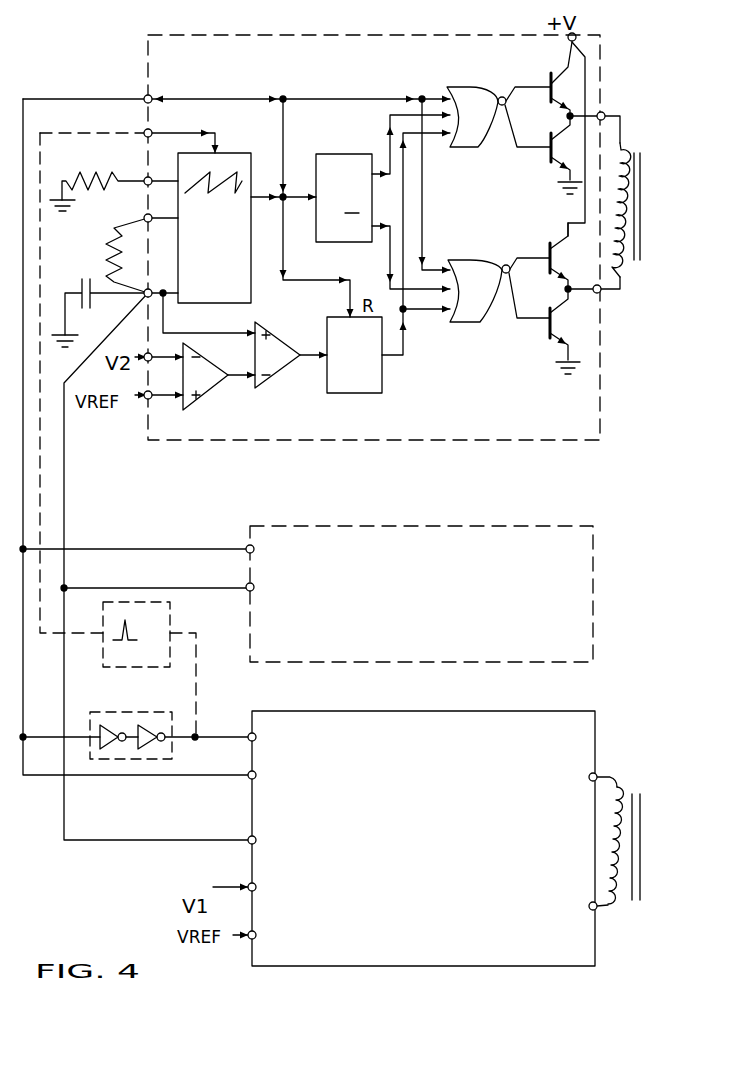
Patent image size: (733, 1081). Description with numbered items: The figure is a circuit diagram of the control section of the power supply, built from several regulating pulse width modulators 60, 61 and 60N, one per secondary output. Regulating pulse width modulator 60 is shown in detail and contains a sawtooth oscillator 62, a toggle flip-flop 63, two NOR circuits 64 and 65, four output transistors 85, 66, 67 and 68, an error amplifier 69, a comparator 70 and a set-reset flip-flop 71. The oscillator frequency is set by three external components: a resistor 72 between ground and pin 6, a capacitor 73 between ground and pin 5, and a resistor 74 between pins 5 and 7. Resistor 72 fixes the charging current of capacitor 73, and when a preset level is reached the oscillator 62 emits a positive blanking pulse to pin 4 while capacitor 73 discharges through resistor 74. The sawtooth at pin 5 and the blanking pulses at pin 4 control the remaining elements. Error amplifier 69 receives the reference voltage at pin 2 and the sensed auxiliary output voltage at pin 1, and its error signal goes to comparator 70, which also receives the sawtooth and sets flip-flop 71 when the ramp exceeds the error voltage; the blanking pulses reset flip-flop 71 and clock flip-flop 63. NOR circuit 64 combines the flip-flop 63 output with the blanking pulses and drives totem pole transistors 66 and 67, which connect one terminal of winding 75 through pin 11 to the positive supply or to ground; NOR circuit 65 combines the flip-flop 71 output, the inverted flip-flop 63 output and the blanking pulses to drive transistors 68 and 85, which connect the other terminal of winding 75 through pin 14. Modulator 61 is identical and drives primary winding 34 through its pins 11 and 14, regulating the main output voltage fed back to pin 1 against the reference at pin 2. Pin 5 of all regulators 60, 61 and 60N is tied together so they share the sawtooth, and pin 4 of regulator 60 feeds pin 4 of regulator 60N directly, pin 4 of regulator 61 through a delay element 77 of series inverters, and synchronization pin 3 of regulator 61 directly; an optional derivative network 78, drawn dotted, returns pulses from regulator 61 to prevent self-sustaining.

The regulating pulse width modulator 60 is at (603, 52).
The additional regulating pulse width modulator 60N is at (585, 525).
The regulating pulse width modulator 61 is at (598, 722).
The sawtooth oscillator 62 is at (241, 156).
The toggle flip-flop 63 is at (355, 153).
The NOR circuit 64 is at (460, 145).
The NOR circuit 65 is at (468, 256).
The output transistor 66 is at (549, 74).
The output transistor 67 is at (549, 141).
The output transistor 68 is at (548, 247).
The output transistor 85 is at (548, 334).
The error amplifier 69 is at (205, 392).
The comparator 70 is at (277, 372).
The set-reset flip-flop 71 is at (382, 374).
The resistor 72 is at (94, 168).
The capacitor 73 is at (80, 280).
The resistor 74 is at (113, 230).
The primary winding 75 is at (628, 150).
The primary winding 34 is at (624, 783).
The delay element 77 is at (117, 712).
The derivative network 78 is at (172, 615).
The pin 11 is at (605, 113).
The pin 14 is at (598, 294).
The pin 1 is at (146, 354).
The pin 2 is at (146, 401).
The pin 3 is at (146, 131).
The pin 4 is at (146, 97).
The pin 5 is at (145, 289).
The pin 6 is at (146, 179).
The pin 7 is at (146, 216).